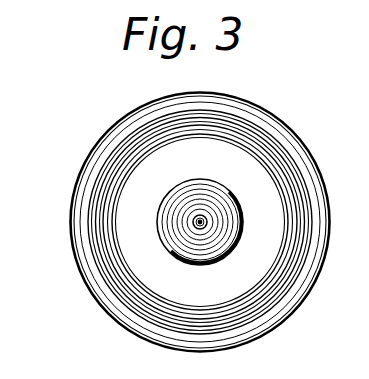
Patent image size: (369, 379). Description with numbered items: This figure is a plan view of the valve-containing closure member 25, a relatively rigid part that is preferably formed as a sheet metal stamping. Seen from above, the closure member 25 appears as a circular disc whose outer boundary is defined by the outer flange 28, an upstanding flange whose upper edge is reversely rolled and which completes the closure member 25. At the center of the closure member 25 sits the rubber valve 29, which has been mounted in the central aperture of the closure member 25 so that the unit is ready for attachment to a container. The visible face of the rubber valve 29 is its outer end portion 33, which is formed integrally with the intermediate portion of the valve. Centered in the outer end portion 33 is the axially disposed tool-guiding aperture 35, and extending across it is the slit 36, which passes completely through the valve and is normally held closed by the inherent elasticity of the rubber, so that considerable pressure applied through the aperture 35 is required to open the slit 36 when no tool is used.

The closure member 25 is at (296, 124).
The outer flange 28 is at (110, 300).
The rubber valve 29 is at (221, 197).
The outer end portion 33 is at (183, 247).
The tool-guiding aperture 35 is at (193, 219).
The slit 36 is at (203, 223).